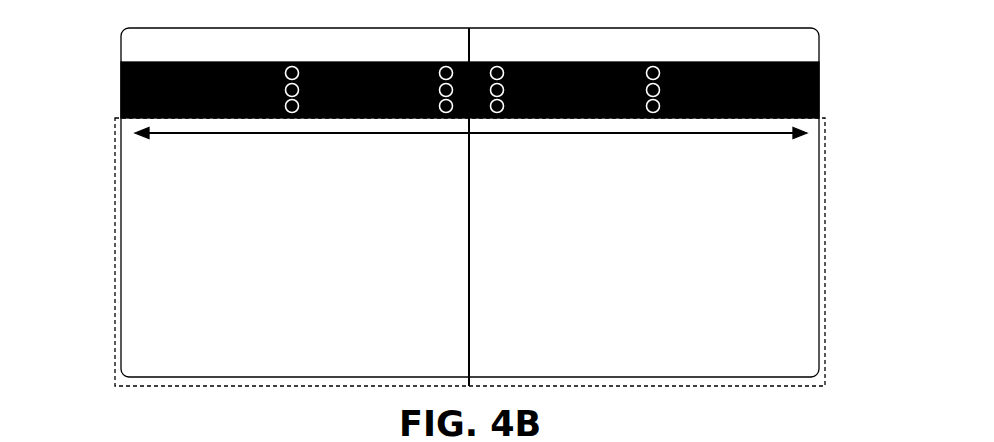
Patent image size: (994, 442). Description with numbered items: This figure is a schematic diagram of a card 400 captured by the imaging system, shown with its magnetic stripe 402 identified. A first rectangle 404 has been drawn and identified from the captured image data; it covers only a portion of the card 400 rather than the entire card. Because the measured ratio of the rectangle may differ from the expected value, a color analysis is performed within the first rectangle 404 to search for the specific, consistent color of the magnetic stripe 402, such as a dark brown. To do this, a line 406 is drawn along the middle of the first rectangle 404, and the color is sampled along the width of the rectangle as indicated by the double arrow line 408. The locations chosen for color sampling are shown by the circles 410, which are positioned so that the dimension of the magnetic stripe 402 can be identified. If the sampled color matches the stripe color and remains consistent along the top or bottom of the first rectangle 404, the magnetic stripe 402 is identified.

The card 400 is at (394, 256).
The magnetic stripe 402 is at (120, 88).
The first rectangle 404 is at (825, 251).
The line 406 is at (470, 199).
The double arrow line 408 is at (592, 134).
The circles 410 is at (653, 62).